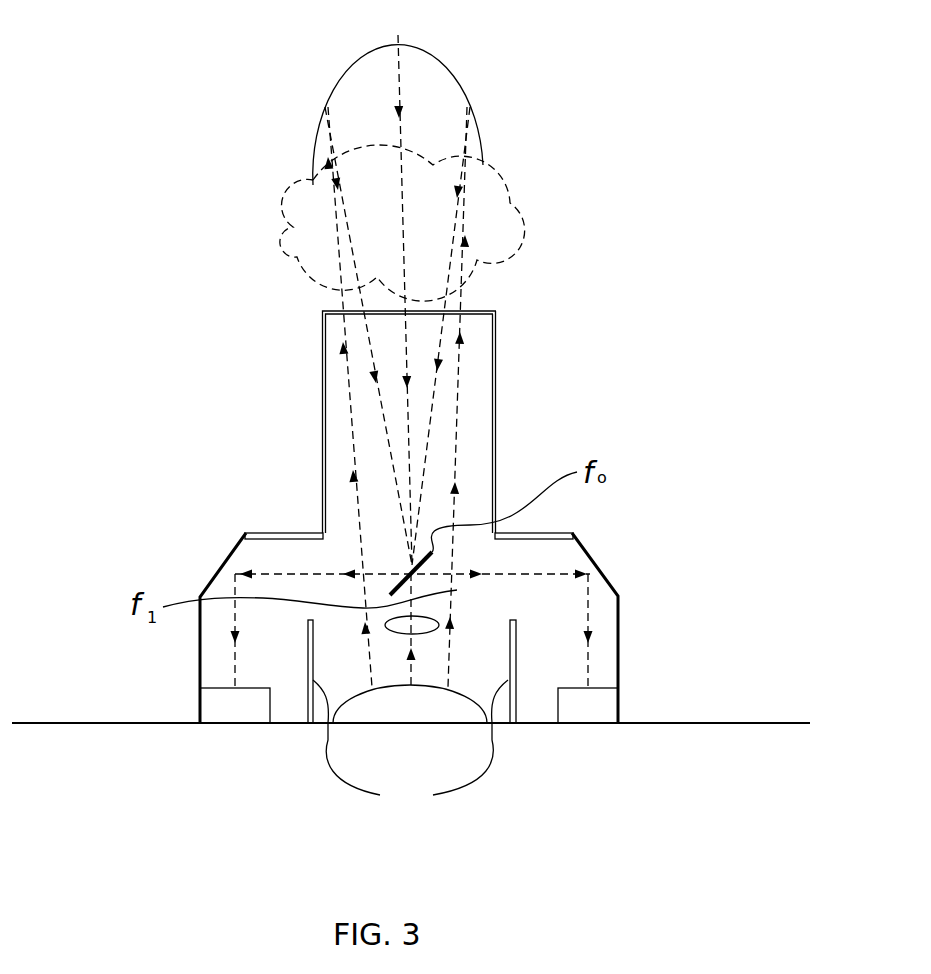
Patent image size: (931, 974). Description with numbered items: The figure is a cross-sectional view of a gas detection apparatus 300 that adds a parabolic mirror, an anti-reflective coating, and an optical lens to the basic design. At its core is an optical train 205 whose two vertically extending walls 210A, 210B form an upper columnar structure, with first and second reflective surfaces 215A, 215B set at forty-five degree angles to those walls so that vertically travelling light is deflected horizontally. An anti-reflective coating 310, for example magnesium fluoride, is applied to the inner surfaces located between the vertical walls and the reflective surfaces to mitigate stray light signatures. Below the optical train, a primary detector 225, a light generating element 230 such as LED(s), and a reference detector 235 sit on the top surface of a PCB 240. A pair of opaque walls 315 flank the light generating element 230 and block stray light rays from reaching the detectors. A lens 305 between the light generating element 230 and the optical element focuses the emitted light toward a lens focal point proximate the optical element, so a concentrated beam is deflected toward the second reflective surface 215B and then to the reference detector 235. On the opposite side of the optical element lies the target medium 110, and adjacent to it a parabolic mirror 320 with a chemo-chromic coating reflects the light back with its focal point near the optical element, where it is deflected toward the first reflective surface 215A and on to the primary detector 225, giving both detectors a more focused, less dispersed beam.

The gas detection apparatus 300 is at (227, 72).
The parabolic mirror 320 is at (460, 77).
The target medium 110 is at (523, 212).
The vertically extending wall 210A is at (323, 330).
The vertically extending wall 210B is at (495, 342).
The optical train 205 is at (405, 405).
The anti-reflective coating 310 is at (280, 540).
The first reflective surface 215A is at (217, 572).
The second reflective surface 215B is at (607, 573).
The lens 305 is at (425, 615).
The primary detector 225 is at (198, 707).
The reference detector 235 is at (593, 725).
The light generating element 230 is at (383, 725).
The pair of walls 315 is at (410, 745).
The PCB 240 is at (95, 725).